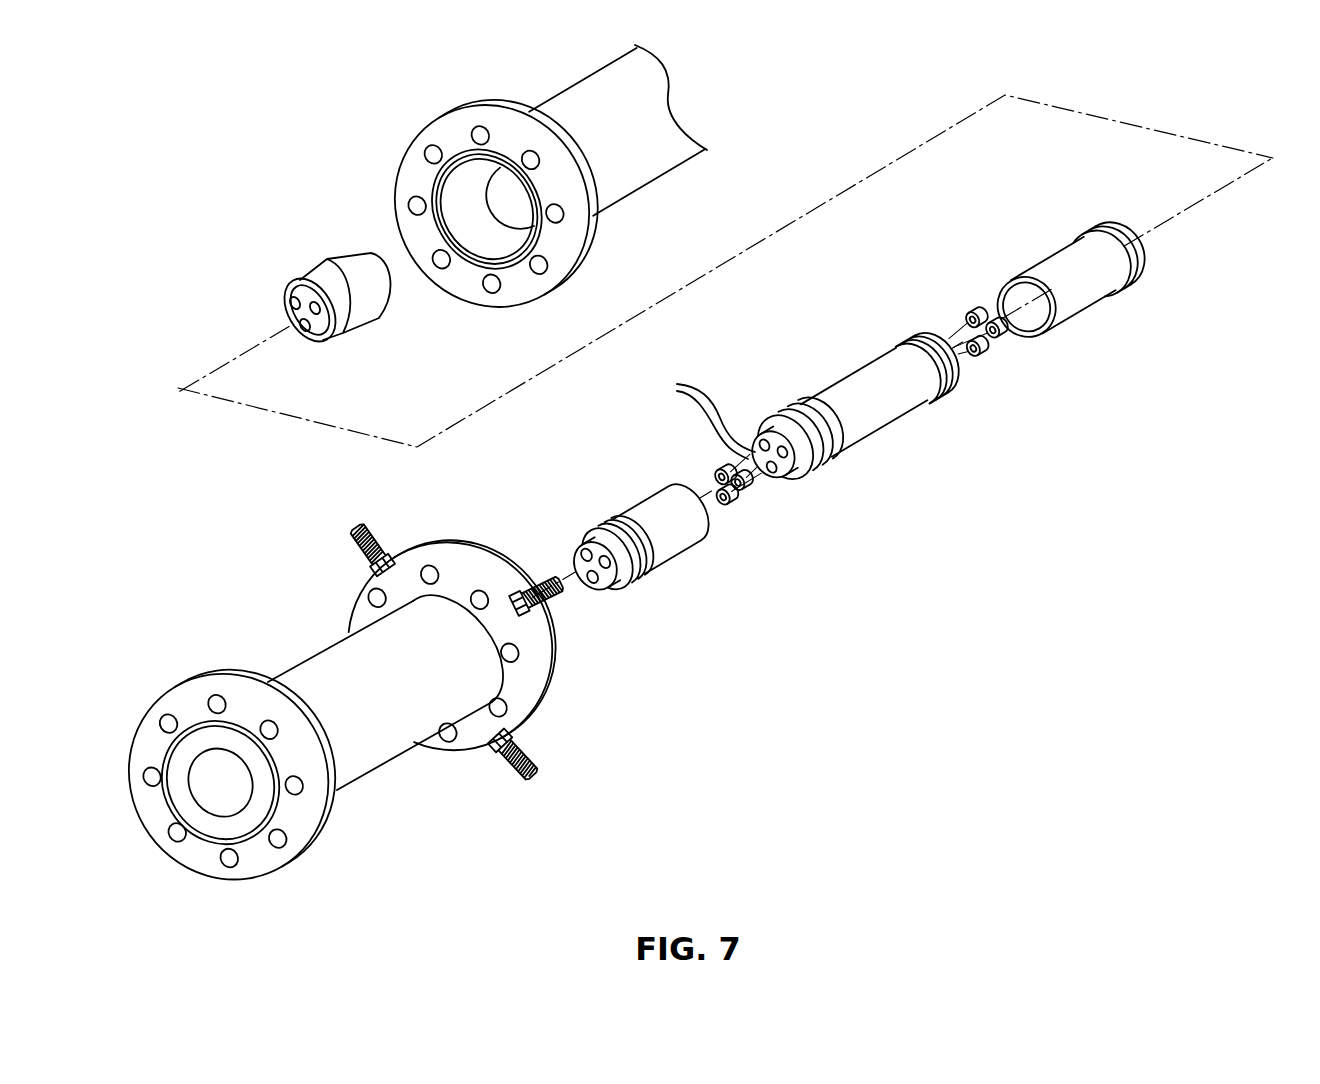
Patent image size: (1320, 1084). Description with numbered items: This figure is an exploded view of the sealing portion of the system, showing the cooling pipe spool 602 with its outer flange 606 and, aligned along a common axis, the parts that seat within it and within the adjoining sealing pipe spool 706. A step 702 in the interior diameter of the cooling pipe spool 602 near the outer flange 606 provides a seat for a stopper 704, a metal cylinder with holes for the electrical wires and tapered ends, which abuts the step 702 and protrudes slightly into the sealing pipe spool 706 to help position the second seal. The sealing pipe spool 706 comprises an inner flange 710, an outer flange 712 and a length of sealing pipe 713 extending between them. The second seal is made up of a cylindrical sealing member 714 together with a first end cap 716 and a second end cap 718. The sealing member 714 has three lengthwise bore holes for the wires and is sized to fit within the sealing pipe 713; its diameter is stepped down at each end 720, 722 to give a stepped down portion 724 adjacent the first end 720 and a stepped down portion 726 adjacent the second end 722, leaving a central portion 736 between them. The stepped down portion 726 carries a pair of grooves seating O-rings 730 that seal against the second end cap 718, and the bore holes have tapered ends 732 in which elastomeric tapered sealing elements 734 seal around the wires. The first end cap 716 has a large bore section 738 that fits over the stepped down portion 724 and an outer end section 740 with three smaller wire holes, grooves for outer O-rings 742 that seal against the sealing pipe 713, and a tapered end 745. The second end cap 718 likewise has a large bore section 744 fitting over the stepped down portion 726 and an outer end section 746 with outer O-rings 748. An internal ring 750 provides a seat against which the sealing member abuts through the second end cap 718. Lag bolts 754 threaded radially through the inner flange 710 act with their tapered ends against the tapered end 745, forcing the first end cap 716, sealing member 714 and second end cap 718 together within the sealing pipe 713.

The cooling pipe spool 602 is at (647, 170).
The outer flange 606 is at (577, 257).
The step 702 is at (468, 187).
The stopper 704 is at (326, 266).
The sealing pipe spool 706 is at (378, 674).
The inner flange 710 is at (470, 557).
The outer flange 712 is at (212, 680).
The sealing pipe 713 is at (318, 665).
The cylindrical sealing member 714 is at (823, 376).
The first end cap 716 is at (1084, 276).
The second end cap 718 is at (650, 507).
The first end 720 is at (946, 337).
The second end 722 is at (772, 437).
The stepped down portion 724 is at (918, 345).
The stepped down portion 726 is at (808, 415).
The O-rings 730 is at (824, 466).
The tapered ends 732 is at (676, 385).
The tapered sealing elements 734 is at (746, 496).
The central portion 736 is at (856, 434).
The large bore section 738 is at (1035, 313).
The outer end section 740 is at (1122, 272).
The outer O-rings 742 is at (1083, 241).
The large bore section 744 is at (705, 517).
The tapered end 745 is at (1121, 241).
The outer end section 746 is at (605, 588).
The outer O-rings 748 is at (620, 523).
The internal ring 750 is at (247, 822).
The lag bolt 754 is at (533, 760).